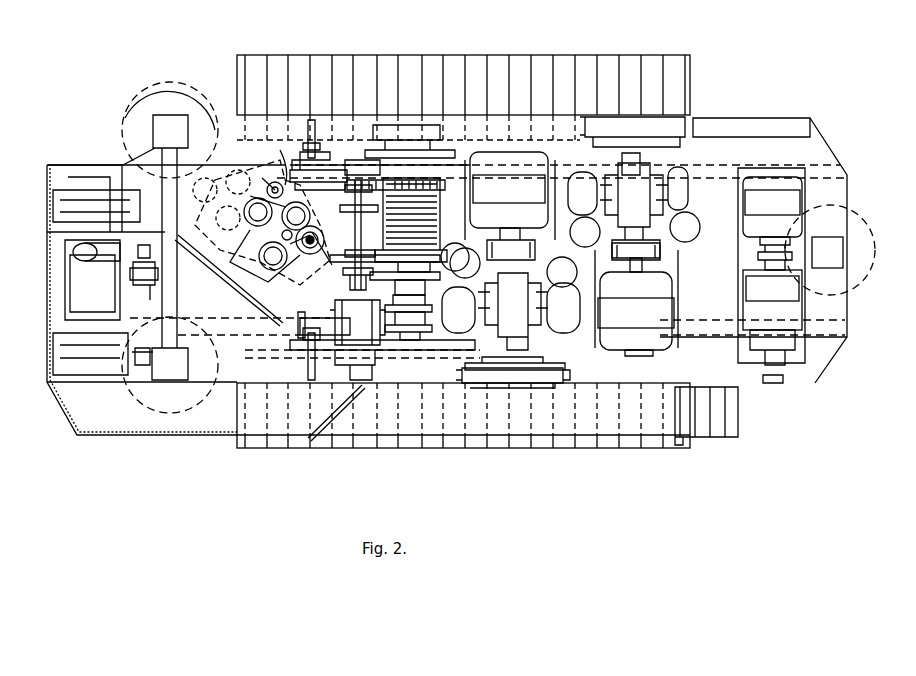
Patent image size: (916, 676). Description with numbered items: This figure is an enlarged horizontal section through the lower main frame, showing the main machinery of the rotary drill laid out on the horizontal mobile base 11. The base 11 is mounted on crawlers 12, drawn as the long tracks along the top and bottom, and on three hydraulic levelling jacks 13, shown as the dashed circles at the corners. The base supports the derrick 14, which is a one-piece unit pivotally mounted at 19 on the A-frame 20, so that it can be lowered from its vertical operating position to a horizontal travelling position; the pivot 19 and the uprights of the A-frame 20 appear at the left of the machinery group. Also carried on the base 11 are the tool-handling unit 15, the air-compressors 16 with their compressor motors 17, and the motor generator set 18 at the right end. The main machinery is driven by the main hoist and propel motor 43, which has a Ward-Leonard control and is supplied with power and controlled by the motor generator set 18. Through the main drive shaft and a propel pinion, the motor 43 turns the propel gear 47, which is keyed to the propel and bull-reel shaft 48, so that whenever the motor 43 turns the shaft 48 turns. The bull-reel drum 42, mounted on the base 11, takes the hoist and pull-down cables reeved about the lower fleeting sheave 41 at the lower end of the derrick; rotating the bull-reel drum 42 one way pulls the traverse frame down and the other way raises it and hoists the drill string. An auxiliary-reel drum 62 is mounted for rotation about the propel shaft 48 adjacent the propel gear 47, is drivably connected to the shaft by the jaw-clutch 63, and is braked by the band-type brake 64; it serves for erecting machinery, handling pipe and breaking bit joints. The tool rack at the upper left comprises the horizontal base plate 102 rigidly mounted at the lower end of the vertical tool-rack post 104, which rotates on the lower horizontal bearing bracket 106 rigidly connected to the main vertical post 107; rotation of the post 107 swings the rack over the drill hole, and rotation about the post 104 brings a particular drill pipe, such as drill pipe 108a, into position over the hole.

The horizontal mobile base 11 is at (112, 418).
The crawlers 12 is at (304, 75).
The hydraulic levelling jacks 13 is at (145, 118).
The derrick 14 is at (333, 182).
The tool-handling unit 15 is at (272, 256).
The air-compressors 16 is at (640, 170).
The compressor motors 17 is at (500, 165).
The motor generator set 18 is at (780, 312).
The pivotal mounting 19 is at (318, 168).
The A-frame 20 is at (316, 126).
The lower fleeting sheave 41 is at (357, 238).
The bull-reel drum 42 is at (424, 222).
The main hoist and propel motor 43 is at (357, 310).
The propel gear 47 is at (420, 290).
The propel and bull-reel shaft 48 is at (418, 272).
The auxiliary-reel drum 62 is at (405, 296).
The jaw-clutch 63 is at (418, 306).
The band-type brake 64 is at (405, 283).
The horizontal base plate 102 is at (270, 248).
The vertical tool-rack post 104 is at (280, 262).
The lower horizontal bearing bracket 106 is at (290, 148).
The main vertical post 107 is at (262, 178).
The drill pipe 108a is at (336, 252).